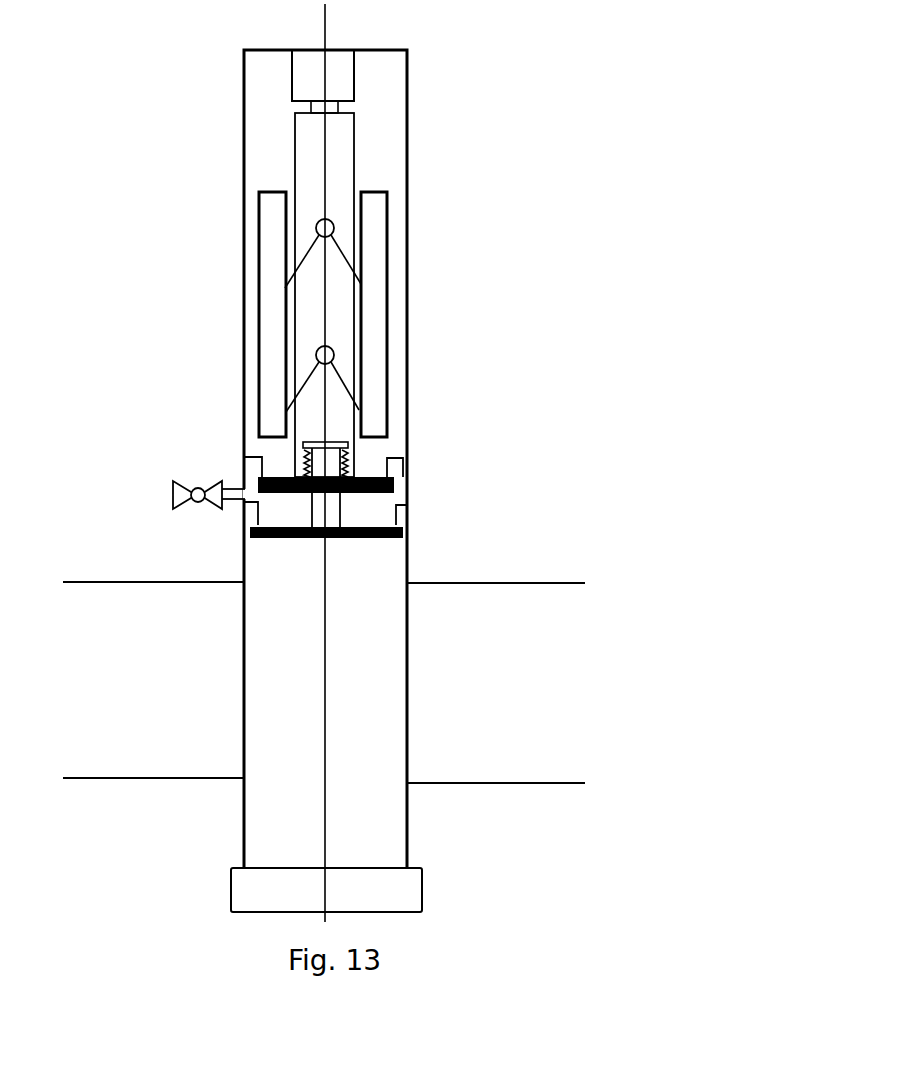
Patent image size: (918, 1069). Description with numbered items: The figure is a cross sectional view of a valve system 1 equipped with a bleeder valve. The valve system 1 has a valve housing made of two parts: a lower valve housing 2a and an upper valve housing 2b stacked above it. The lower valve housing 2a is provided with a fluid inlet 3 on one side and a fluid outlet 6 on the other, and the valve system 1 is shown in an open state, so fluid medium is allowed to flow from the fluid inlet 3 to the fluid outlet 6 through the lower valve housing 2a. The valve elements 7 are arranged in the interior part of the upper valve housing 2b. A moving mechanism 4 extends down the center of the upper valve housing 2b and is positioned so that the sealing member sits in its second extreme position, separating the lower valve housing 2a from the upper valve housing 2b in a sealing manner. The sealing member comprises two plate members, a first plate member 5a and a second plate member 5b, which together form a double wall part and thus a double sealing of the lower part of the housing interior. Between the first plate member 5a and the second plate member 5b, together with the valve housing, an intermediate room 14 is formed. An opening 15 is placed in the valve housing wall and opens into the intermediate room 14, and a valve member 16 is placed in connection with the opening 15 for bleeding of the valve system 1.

The valve system 1 is at (475, 39).
The lower valve housing 2a is at (400, 813).
The upper valve housing 2b is at (398, 228).
The fluid inlet 3 is at (147, 678).
The moving mechanism 4 is at (342, 150).
The first plate member 5a is at (392, 480).
The second plate member 5b is at (398, 521).
The fluid outlet 6 is at (517, 658).
The valve elements 7 is at (263, 268).
The intermediate room 14 is at (380, 502).
The opening 15 is at (243, 482).
The valve member 16 is at (172, 494).